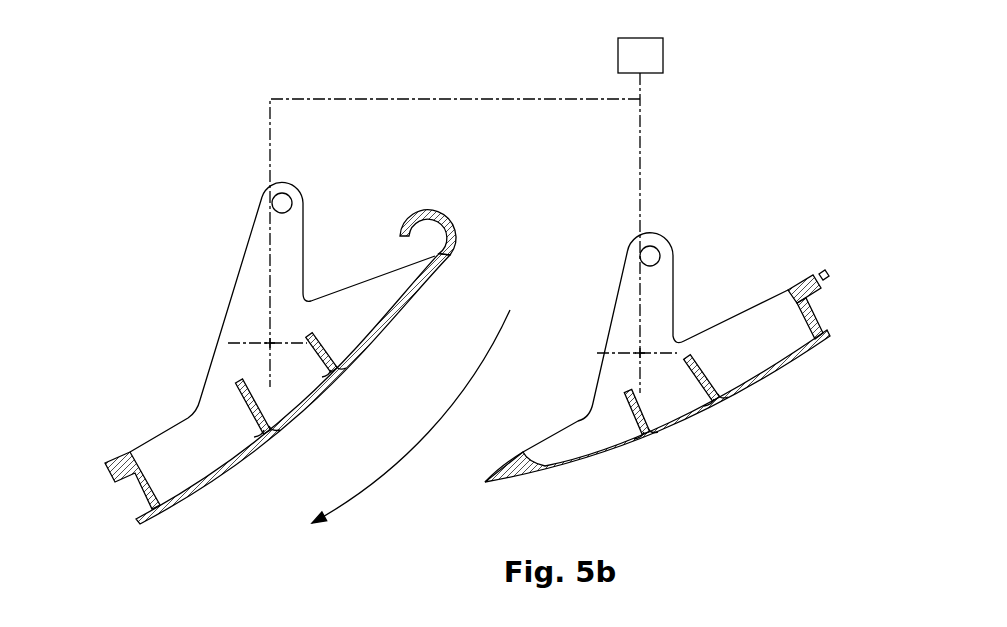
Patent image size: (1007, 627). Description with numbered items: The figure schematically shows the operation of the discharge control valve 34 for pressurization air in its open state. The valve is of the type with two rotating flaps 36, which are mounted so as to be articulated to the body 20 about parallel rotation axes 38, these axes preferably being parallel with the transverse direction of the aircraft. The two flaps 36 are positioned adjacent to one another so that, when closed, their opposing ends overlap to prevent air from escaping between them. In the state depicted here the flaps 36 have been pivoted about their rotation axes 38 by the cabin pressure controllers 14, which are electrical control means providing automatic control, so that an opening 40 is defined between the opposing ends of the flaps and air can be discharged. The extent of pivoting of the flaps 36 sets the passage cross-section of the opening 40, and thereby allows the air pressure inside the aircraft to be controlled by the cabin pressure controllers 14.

The cabin pressure controller 14 is at (466, 215).
The body 20 is at (552, 333).
The discharge control valve 34 is at (375, 187).
The flap 36 is at (192, 452).
The rotation axis 38 is at (270, 343).
The opening 40 is at (411, 416).